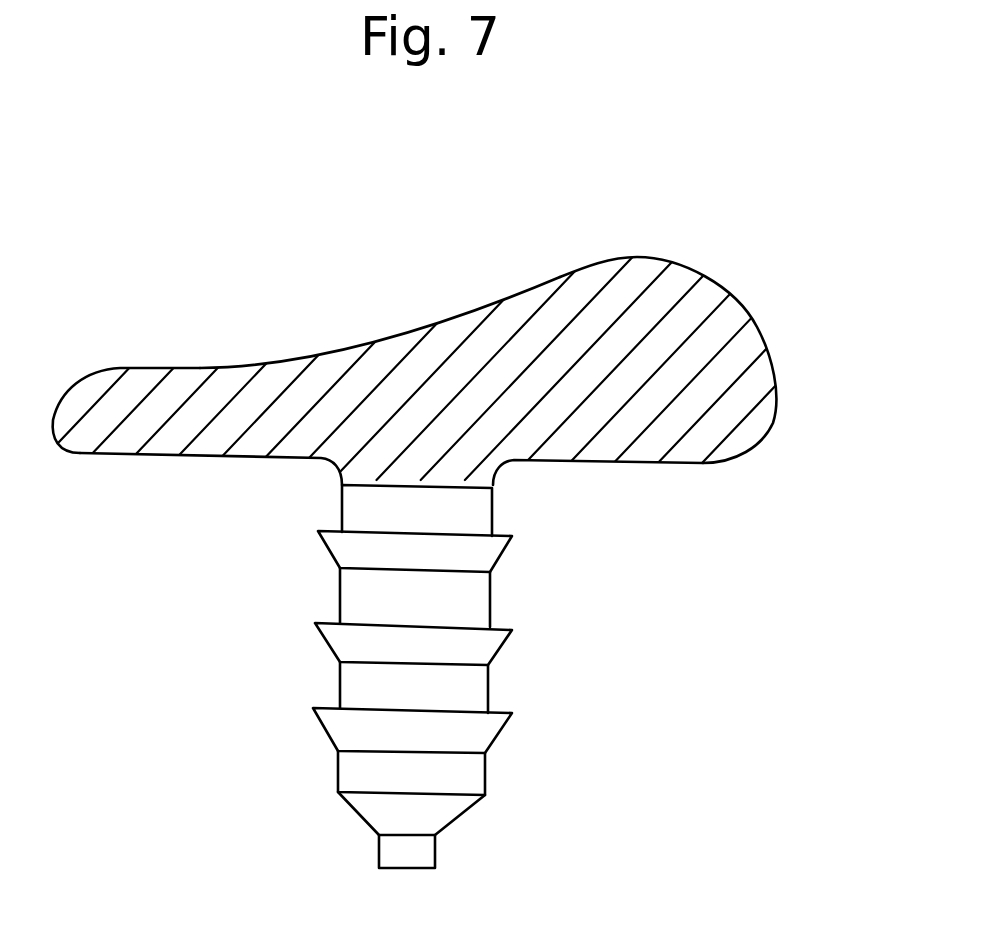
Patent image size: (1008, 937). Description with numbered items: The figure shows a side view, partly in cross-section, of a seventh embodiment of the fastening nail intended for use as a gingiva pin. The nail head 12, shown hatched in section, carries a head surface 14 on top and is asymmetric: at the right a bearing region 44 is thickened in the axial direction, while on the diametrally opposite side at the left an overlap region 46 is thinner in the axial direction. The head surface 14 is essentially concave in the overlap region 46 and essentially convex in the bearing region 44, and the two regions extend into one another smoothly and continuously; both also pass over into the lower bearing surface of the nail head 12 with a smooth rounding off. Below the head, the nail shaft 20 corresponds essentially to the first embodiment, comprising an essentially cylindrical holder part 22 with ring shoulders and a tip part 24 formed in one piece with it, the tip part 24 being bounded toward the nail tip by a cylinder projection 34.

The nail head 12 is at (813, 405).
The head surface 14 is at (437, 313).
The nail shaft 20 is at (631, 609).
The holder part 22 is at (470, 679).
The tip part 24 is at (523, 830).
The cylinder projection 34 is at (422, 848).
The bearing region 44 is at (731, 264).
The overlap region 46 is at (198, 341).